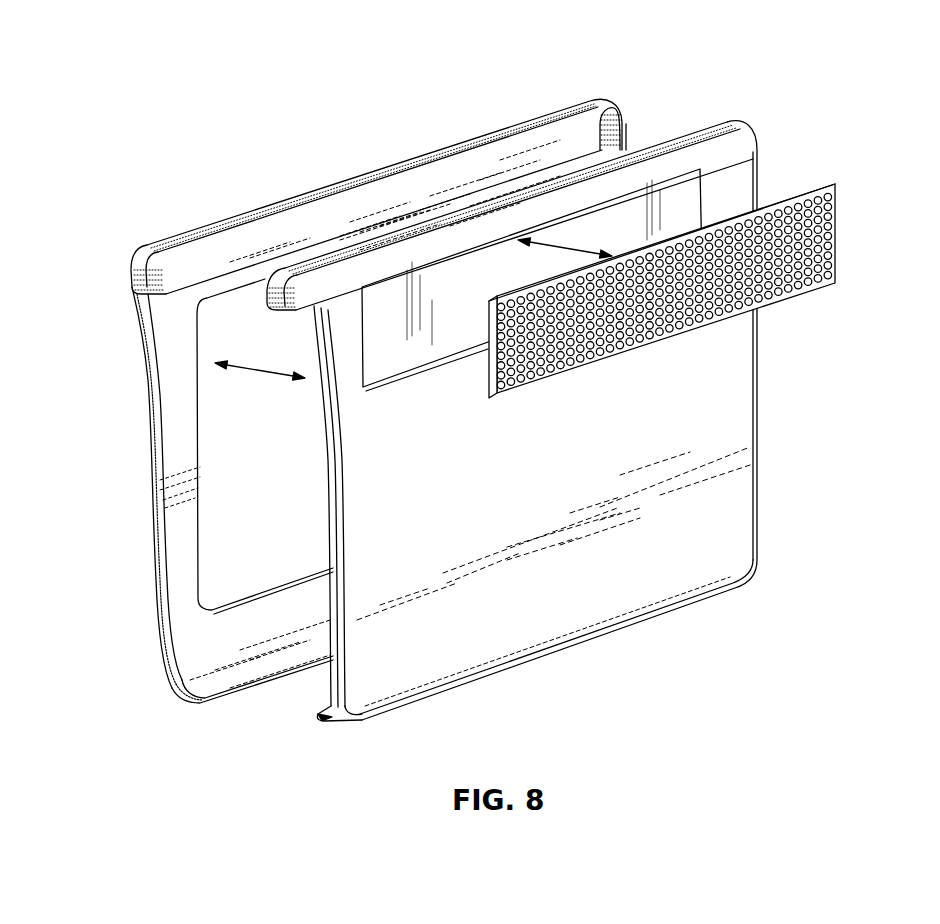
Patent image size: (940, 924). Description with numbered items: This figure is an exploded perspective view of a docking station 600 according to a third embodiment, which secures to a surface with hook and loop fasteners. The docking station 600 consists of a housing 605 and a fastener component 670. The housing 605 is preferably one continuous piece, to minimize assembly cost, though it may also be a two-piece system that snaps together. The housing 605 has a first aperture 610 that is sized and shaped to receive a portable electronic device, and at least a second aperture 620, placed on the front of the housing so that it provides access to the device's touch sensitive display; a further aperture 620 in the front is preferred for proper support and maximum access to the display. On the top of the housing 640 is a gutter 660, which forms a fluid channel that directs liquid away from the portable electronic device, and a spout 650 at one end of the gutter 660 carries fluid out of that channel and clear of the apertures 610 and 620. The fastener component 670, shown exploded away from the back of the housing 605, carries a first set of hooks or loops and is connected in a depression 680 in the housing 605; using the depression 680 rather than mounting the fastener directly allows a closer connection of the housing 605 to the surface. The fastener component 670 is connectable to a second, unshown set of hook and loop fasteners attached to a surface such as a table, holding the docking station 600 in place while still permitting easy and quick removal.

The docking station 600 is at (862, 65).
The housing 605 is at (177, 575).
The first aperture 610 is at (152, 445).
The second aperture 620 is at (293, 457).
The housing 640 is at (360, 168).
The spout 650 is at (130, 278).
The gutter 660 is at (540, 113).
The fastener component 670 is at (780, 197).
The depression 680 is at (678, 192).